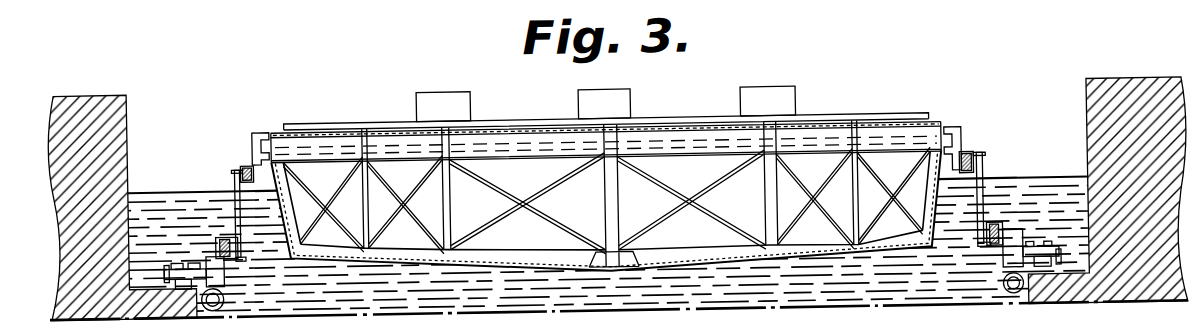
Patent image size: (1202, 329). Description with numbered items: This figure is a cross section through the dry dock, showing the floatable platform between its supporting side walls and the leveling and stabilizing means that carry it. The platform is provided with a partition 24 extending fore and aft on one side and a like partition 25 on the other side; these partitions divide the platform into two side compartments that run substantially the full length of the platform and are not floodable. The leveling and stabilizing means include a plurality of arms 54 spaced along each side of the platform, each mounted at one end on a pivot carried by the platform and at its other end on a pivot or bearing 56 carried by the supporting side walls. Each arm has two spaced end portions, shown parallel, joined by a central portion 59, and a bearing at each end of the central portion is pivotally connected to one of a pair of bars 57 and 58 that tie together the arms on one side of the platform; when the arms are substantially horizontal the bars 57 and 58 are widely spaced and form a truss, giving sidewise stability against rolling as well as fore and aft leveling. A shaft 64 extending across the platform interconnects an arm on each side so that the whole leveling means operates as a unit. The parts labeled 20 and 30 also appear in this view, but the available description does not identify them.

The roadway deck 20 is at (897, 118).
The partition 24 is at (366, 187).
The partition 25 is at (854, 180).
The channel bottom 30 is at (619, 314).
The arm 54 is at (263, 135).
The pivot or bearing 56 is at (183, 256).
The bar 57 is at (247, 160).
The bar 58 is at (229, 231).
The central portion 59 is at (239, 164).
The shaft 64 is at (348, 141).